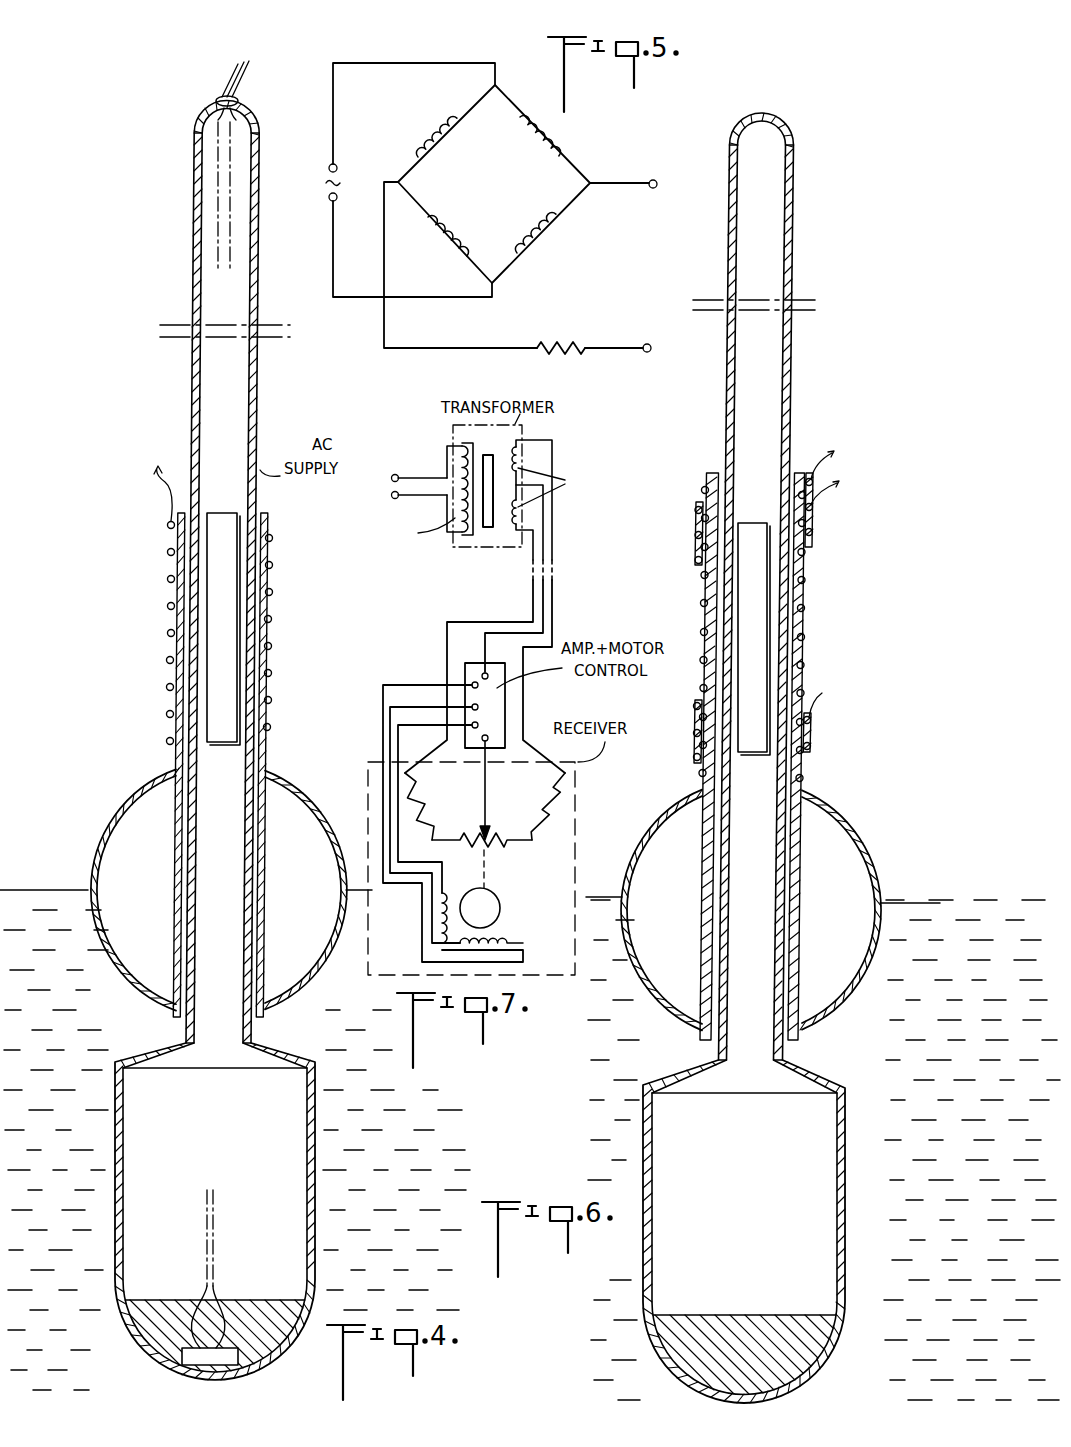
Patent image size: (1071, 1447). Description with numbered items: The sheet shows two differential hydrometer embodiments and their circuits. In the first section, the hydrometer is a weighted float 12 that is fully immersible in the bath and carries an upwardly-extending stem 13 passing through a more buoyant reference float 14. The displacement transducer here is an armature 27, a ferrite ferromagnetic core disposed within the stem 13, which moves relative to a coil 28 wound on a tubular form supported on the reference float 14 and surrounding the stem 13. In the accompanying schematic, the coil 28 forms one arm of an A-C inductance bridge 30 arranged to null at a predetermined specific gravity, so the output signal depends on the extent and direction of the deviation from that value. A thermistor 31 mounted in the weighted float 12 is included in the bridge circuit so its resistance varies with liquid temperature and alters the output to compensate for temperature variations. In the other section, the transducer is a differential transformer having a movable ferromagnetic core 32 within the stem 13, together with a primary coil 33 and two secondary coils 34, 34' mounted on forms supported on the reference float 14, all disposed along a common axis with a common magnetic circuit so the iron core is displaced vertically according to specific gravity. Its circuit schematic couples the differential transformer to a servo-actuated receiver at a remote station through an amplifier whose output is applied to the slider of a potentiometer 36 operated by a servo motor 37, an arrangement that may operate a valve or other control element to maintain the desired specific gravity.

In FIG. 4, the weighted float 12 is at (113, 1094).
In FIG. 6, the weighted float 12 is at (642, 1147).
In FIG. 4, the stem 13 is at (190, 401).
In FIG. 6, the stem 13 is at (790, 378).
In FIG. 4, the reference float 14 is at (141, 781).
In FIG. 6, the reference float 14 is at (852, 827).
In FIG. 4, the armature 27 is at (214, 671).
In FIG. 4, the coil 28 is at (168, 715).
In FIG. 5, the coil 28 is at (448, 240).
In FIG. 5, the A-C inductance bridge 30 is at (522, 213).
In FIG. 4, the thermistor 31 is at (196, 1362).
In FIG. 5, the thermistor 31 is at (558, 346).
In FIG. 6, the movable ferromagnetic core 32 is at (750, 637).
In FIG. 7, the movable ferromagnetic core 32 is at (489, 547).
In FIG. 6, the primary coil 33 is at (704, 601).
In FIG. 7, the primary coil 33 is at (465, 549).
In FIG. 6, the secondary coil 34 is at (740, 508).
In FIG. 7, the secondary coil 34 is at (593, 487).
In FIG. 6, the secondary coil 34' is at (729, 735).
In FIG. 7, the secondary coil 34' is at (561, 522).
In FIG. 7, the potentiometer 36 is at (507, 834).
In FIG. 7, the servo motor 37 is at (499, 911).